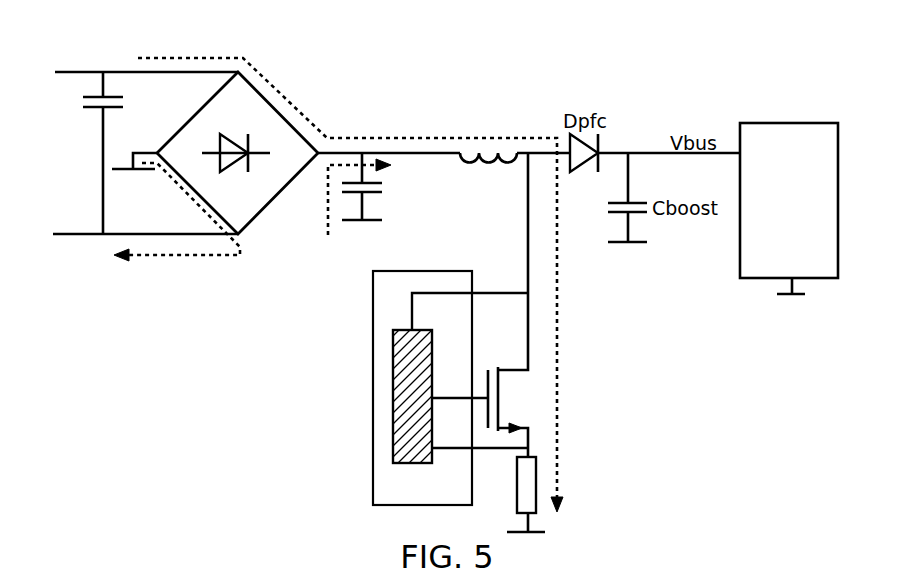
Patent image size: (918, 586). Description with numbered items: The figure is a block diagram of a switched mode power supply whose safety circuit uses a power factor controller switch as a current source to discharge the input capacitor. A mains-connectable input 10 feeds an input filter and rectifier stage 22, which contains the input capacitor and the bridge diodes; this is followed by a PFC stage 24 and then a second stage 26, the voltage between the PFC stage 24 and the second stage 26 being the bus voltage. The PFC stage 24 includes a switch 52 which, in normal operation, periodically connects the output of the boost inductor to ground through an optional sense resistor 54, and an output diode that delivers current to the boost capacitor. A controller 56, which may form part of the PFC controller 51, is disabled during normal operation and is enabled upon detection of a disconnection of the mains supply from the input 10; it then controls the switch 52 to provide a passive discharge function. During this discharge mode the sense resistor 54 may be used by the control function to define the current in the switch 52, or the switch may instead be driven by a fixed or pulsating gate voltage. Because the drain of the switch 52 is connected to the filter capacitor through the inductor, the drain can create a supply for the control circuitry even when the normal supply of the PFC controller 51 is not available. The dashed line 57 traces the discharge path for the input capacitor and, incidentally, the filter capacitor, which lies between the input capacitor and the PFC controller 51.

The mains-connectable input 10 is at (65, 174).
The input filter and rectifier stage 22 is at (55, 52).
The PFC stage 24 is at (330, 110).
The second stage 26 is at (779, 214).
The PFC controller 51 is at (382, 496).
The switch 52 is at (500, 400).
The sense resistor 54 is at (537, 483).
The controller 56 is at (400, 398).
The discharge path 57 is at (555, 318).